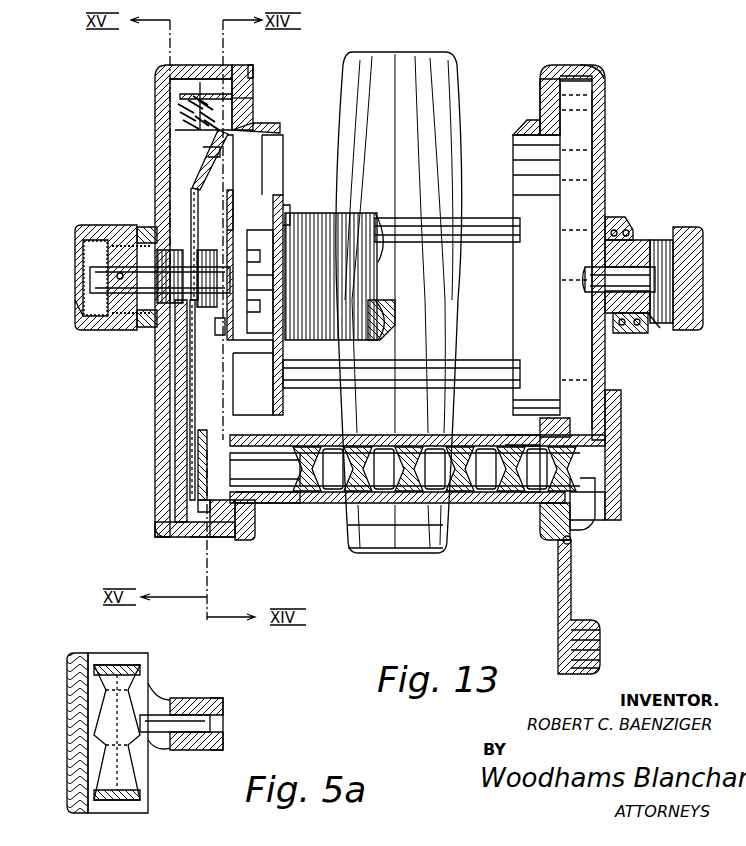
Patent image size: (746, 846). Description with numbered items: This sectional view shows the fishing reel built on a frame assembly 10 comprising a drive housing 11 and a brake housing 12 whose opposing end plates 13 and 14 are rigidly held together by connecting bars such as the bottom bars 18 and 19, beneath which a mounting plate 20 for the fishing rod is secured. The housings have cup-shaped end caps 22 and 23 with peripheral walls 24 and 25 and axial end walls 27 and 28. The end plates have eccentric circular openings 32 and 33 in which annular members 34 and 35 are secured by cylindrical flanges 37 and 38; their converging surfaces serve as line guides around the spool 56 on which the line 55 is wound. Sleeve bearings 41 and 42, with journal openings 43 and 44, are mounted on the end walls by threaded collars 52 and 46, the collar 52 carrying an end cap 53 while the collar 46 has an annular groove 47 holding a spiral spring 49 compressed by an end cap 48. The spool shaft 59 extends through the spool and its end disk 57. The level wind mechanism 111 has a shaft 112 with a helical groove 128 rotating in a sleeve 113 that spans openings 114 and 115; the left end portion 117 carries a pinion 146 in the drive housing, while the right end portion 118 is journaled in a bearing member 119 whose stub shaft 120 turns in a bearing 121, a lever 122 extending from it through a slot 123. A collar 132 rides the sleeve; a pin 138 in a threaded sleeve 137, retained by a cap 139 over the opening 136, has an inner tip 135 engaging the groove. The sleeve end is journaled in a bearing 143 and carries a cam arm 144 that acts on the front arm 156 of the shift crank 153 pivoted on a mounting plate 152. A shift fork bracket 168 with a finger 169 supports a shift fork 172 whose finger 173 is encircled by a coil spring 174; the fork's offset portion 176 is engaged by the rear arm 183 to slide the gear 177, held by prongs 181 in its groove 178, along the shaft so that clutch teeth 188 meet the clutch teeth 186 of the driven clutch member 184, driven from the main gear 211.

In FIG. 13, the frame assembly 10 is at (153, 500).
In FIG. 13, the drive housing 11 is at (152, 78).
In FIG. 13, the brake housing 12 is at (616, 94).
In FIG. 13, the end plate 13 is at (246, 71).
In FIG. 13, the end plate 14 is at (548, 83).
In FIG. 13, the connecting bar 18 is at (478, 230).
In FIG. 13, the front bottom connecting bar 19 is at (482, 372).
In FIG. 13, the mounting plate 20 is at (385, 62).
In FIG. 13, the end cap 22 is at (160, 536).
In FIG. 13, the end cap 23 is at (600, 66).
In FIG. 13, the peripheral wall 24 is at (203, 540).
In FIG. 13, the peripheral wall 25 is at (578, 70).
In FIG. 13, the end wall 27 is at (163, 124).
In FIG. 13, the end wall 28 is at (606, 130).
In FIG. 13, the circular opening 32 is at (250, 102).
In FIG. 13, the circular opening 33 is at (562, 117).
In FIG. 13, the annular member 34 is at (268, 124).
In FIG. 13, the annular member 35 is at (524, 122).
In FIG. 13, the cylindrical flange 37 is at (280, 152).
In FIG. 13, the cylindrical flange 38 is at (553, 145).
In FIG. 13, the sleeve bearing 41 is at (112, 332).
In FIG. 13, the sleeve bearing 42 is at (658, 238).
In FIG. 13, the journal opening 43 is at (110, 228).
In FIG. 13, the journal opening 44 is at (620, 268).
In FIG. 13, the externally threaded collar 46 is at (652, 330).
In FIG. 13, the annular groove 47 is at (632, 334).
In FIG. 13, the end cap 48 is at (700, 328).
In FIG. 13, the spiral spring 49 is at (636, 225).
In FIG. 13, the externally threaded collar 52 is at (132, 331).
In FIG. 13, the end cap 53 is at (78, 324).
In FIG. 13, the line 55 is at (368, 212).
In FIG. 13, the spool 56 is at (386, 332).
In FIG. 13, the end disk 57 is at (285, 192).
In FIG. 13, the shaft 59 is at (96, 280).
In FIG. 13, the level wind mechanism 111 is at (490, 507).
In FIG. 13, the shaft 112 is at (338, 488).
In FIG. 13, the sleeve 113 is at (532, 508).
In FIG. 13, the opening 114 is at (258, 497).
In FIG. 13, the opening 115 is at (515, 500).
In FIG. 13, the left end portion 117 is at (250, 467).
In FIG. 13, the right end portion 118 is at (520, 440).
In FIG. 13, the bearing member 119 is at (550, 418).
In FIG. 13, the stub shaft 120 is at (622, 468).
In FIG. 13, the bearing 121 is at (604, 494).
In FIG. 13, the lever 122 is at (573, 595).
In FIG. 13, the slot 123 is at (572, 543).
In FIG. 13, the helical groove 128 is at (466, 492).
In FIG. 13, the collar 132 is at (387, 538).
In FIG. 5A, the collar 132 is at (148, 757).
In FIG. 5A, the inner tip 135 is at (148, 700).
In FIG. 5A, the radially disposed opening 136 is at (182, 702).
In FIG. 5A, the externally threaded sleeve 137 is at (192, 750).
In FIG. 5A, the pin 138 is at (215, 711).
In FIG. 5A, the cap 139 is at (226, 744).
In FIG. 13, the bearing 143 is at (248, 532).
In FIG. 13, the cam arm 144 is at (222, 537).
In FIG. 13, the pinion 146 is at (210, 502).
In FIG. 13, the mounting plate 152 is at (233, 178).
In FIG. 13, the shift crank 153 is at (231, 215).
In FIG. 13, the front arm 156 is at (233, 408).
In FIG. 13, the shift fork bracket 168 is at (204, 78).
In FIG. 13, the finger 169 is at (182, 96).
In FIG. 13, the shift fork 172 is at (187, 172).
In FIG. 13, the finger 173 is at (254, 82).
In FIG. 13, the coil spring 174 is at (202, 84).
In FIG. 13, the offset portion 176 is at (206, 152).
In FIG. 13, the gear 177 is at (207, 252).
In FIG. 13, the annular groove 178 is at (175, 252).
In FIG. 13, the prong 181 is at (262, 212).
In FIG. 13, the rear arm 183 is at (210, 128).
In FIG. 13, the driven clutch member 184 is at (267, 340).
In FIG. 13, the clutch teeth 186 is at (278, 215).
In FIG. 13, the clutch teeth 188 is at (222, 320).
In FIG. 13, the main gear 211 is at (182, 440).